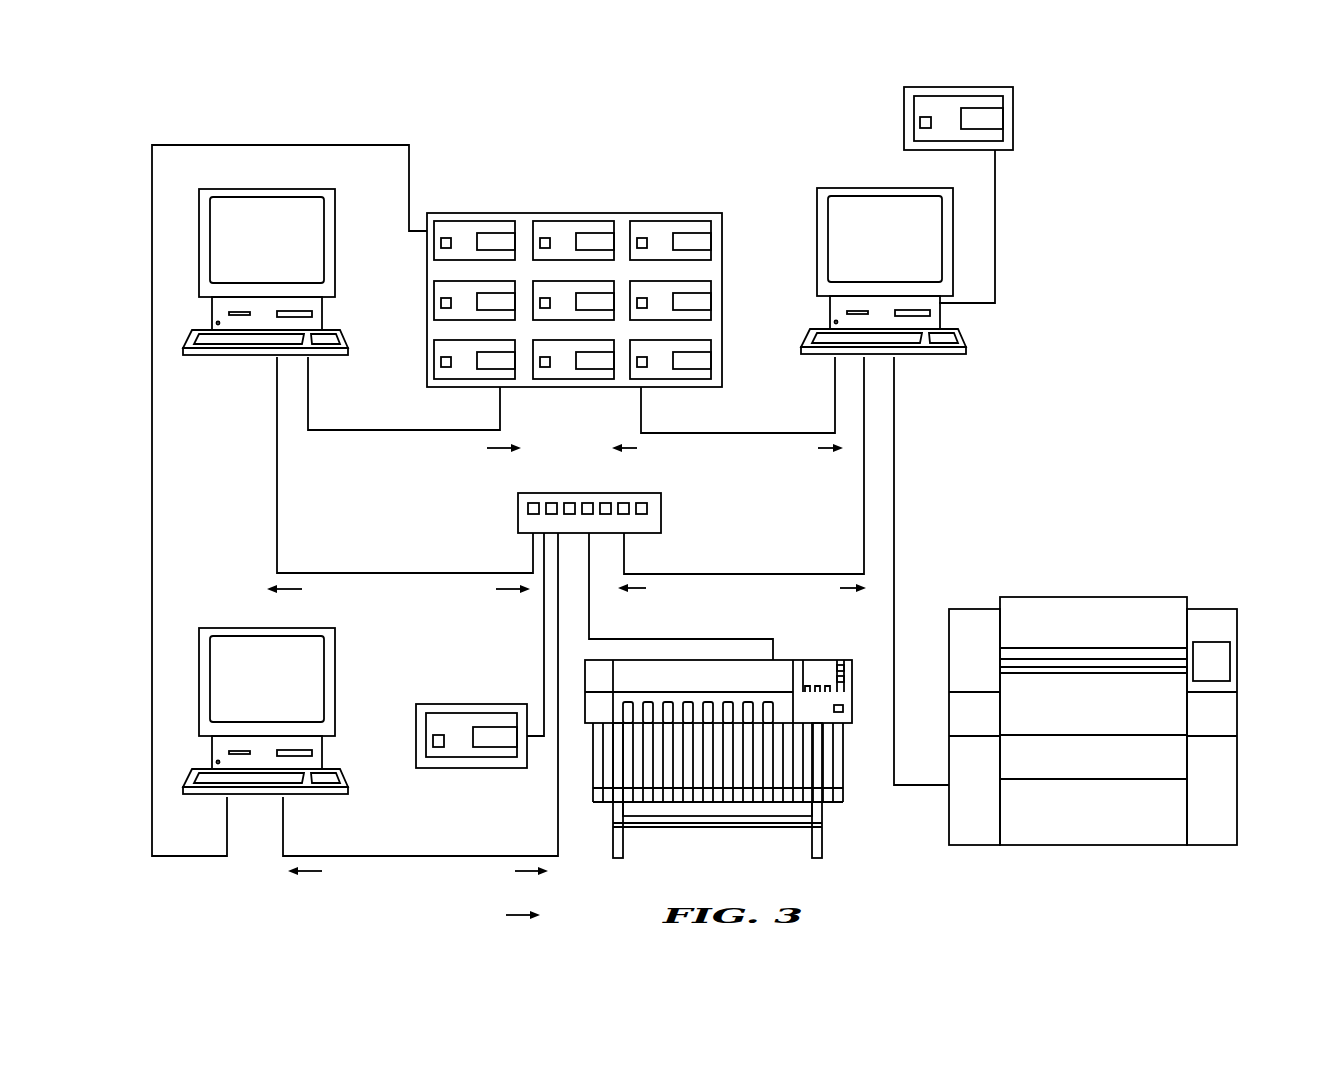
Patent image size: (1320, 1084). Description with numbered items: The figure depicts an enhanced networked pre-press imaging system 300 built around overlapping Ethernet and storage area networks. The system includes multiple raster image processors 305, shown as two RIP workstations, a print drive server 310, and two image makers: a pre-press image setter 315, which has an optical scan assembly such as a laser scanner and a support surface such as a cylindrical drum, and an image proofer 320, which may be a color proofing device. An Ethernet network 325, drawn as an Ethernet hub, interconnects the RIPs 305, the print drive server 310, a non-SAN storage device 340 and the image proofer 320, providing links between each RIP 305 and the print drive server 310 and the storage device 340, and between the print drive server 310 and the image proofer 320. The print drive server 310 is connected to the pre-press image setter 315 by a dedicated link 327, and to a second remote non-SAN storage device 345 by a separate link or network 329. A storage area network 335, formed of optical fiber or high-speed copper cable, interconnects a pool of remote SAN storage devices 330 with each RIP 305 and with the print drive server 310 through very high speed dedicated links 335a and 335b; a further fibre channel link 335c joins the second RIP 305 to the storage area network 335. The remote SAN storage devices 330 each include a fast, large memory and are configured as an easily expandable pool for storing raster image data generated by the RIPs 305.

The networked pre-press imaging system 300 is at (1130, 228).
The raster image processor 305 is at (335, 245).
The print drive server 310 is at (939, 320).
The pre-press image setter 315 is at (1237, 622).
The image proofer 320 is at (822, 830).
The Ethernet network 325 is at (661, 508).
The dedicated link 327 is at (894, 509).
The separate link or network 329 is at (995, 177).
The remote SAN storage device 330 is at (434, 245).
The storage area network 335 is at (683, 213).
The dedicated link 335a is at (308, 385).
The dedicated link 335b is at (835, 386).
The fibre channel connection from RIP 2 to SAN 335c is at (409, 157).
The non-SAN storage device 340 is at (490, 704).
The non-SAN storage device 345 is at (1013, 113).